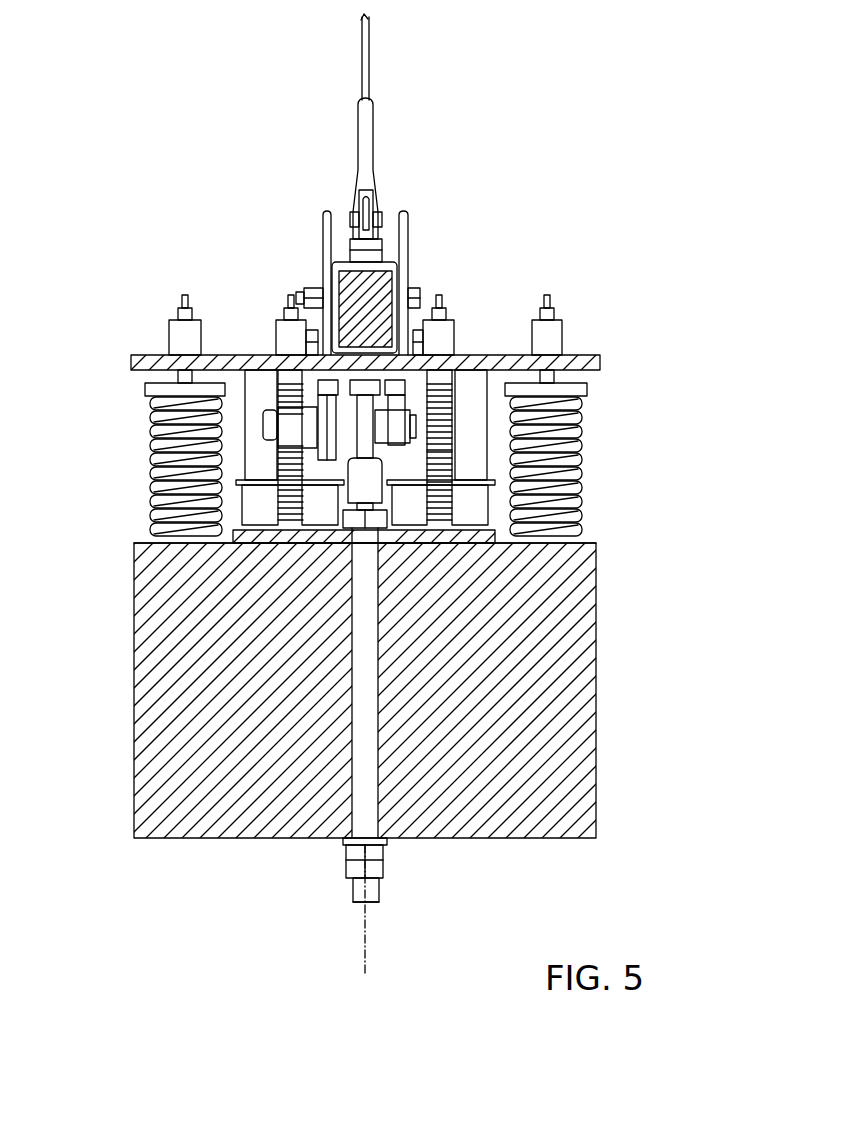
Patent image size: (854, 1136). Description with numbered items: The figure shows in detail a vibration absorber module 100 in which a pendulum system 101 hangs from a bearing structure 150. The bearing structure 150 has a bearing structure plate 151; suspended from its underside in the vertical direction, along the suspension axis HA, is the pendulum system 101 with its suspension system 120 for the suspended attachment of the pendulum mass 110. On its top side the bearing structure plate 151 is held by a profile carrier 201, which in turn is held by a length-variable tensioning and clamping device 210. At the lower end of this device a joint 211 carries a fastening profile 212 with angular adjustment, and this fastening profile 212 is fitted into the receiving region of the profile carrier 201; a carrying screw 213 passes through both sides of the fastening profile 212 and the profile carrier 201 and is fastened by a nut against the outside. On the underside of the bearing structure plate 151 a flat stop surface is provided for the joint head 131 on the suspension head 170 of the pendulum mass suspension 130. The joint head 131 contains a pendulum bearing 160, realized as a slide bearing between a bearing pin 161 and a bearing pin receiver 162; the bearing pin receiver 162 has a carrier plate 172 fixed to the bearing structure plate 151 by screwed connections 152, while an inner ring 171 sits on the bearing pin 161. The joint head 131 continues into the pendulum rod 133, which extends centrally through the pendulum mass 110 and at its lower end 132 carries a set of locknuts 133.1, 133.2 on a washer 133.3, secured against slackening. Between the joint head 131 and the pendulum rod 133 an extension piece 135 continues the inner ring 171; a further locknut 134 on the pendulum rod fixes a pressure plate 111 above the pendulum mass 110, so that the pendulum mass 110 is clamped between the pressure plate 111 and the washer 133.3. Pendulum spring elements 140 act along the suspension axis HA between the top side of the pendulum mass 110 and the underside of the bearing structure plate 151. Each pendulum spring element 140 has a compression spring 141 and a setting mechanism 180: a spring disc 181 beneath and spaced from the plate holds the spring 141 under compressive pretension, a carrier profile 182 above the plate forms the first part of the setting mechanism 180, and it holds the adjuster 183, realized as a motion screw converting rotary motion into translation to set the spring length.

The vibration absorber module 100 is at (504, 106).
The pendulum system 101 is at (662, 385).
The pendulum mass 110 is at (528, 595).
The pressure plate 111 is at (545, 548).
The suspension system 120 is at (102, 463).
The pendulum mass suspension 130 is at (371, 756).
The joint head 131 is at (350, 530).
The lower end 132 is at (378, 904).
The pendulum rod 133 is at (355, 830).
The locknut 133.1 is at (385, 862).
The locknut 133.2 is at (380, 888).
The washer 133.3 is at (388, 840).
The locknut 134 is at (355, 508).
The extension piece 135 is at (360, 470).
The pendulum spring element 140 is at (600, 468).
The spring 141 is at (590, 447).
The bearing structure 150 is at (262, 302).
The bearing structure plate 151 is at (602, 362).
The screwed connections 152 is at (306, 335).
The pendulum bearing 160 is at (320, 430).
The bearing pin 161 is at (265, 414).
The bearing pin receiver 162 is at (425, 405).
The suspension head 170 is at (262, 427).
The inner ring 171 is at (290, 487).
The carrier plate 172 is at (440, 400).
The setting mechanism 180 is at (566, 334).
The spring disc 181 is at (589, 389).
The carrier profile 182 is at (538, 330).
The adjuster 183 is at (548, 300).
The profile carrier 201 is at (410, 219).
The tensioning and clamping device 210 is at (374, 136).
The joint 211 is at (380, 196).
The fastening profile 212 is at (352, 262).
The carrying screw 213 is at (412, 302).
The suspension axis HA is at (364, 950).